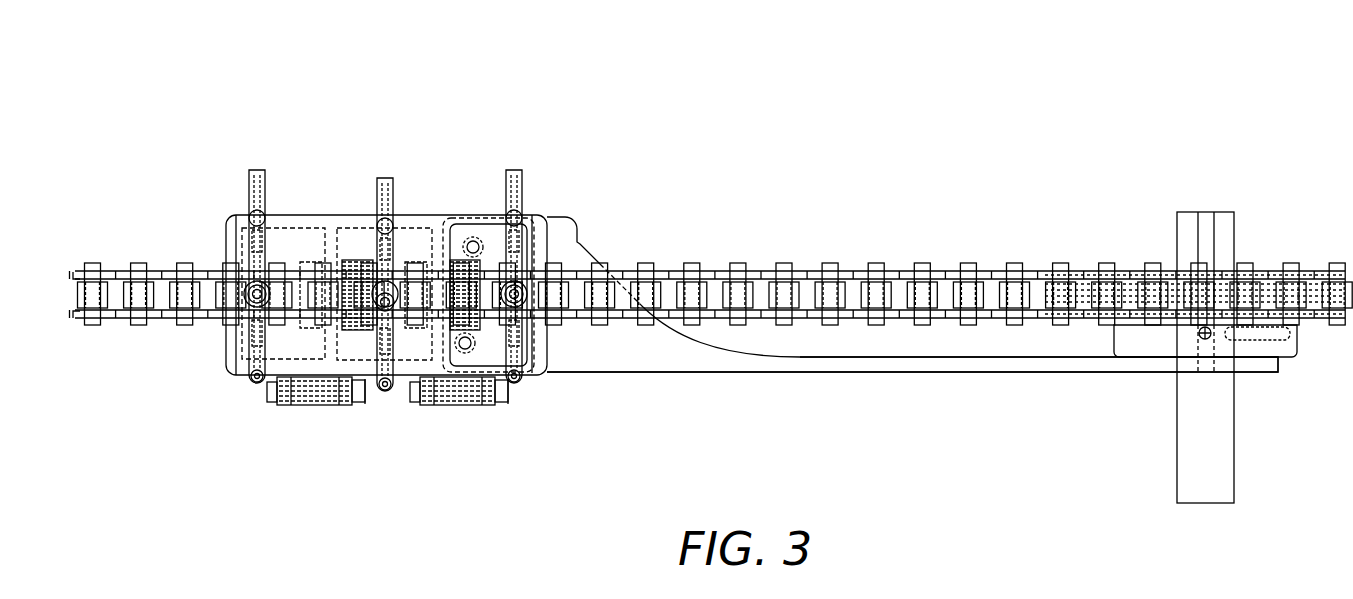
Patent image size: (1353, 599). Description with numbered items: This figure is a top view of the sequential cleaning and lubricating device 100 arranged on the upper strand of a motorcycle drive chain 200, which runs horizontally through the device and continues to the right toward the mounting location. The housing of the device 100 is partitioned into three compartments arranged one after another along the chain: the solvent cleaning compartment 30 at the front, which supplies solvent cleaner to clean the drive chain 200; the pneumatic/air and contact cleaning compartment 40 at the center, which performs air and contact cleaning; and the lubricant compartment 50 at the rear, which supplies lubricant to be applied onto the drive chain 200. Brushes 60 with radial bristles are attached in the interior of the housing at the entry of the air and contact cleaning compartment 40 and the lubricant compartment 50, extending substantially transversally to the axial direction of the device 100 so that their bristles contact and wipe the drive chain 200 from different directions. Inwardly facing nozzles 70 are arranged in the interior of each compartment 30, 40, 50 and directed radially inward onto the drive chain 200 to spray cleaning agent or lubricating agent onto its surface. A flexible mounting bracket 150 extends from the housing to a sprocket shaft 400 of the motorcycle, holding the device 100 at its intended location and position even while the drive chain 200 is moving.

The sequential cleaning and lubricating device 100 is at (1108, 68).
The drive chain 200 is at (935, 262).
The solvent cleaning compartment 30 is at (280, 260).
The pneumatic/air and contact cleaning compartment 40 is at (415, 238).
The lubricant compartment 50 is at (483, 263).
The brushes 60 is at (356, 260).
The nozzles 70 is at (388, 332).
The flexible mounting bracket 150 is at (930, 370).
The sprocket shaft 400 is at (1200, 440).